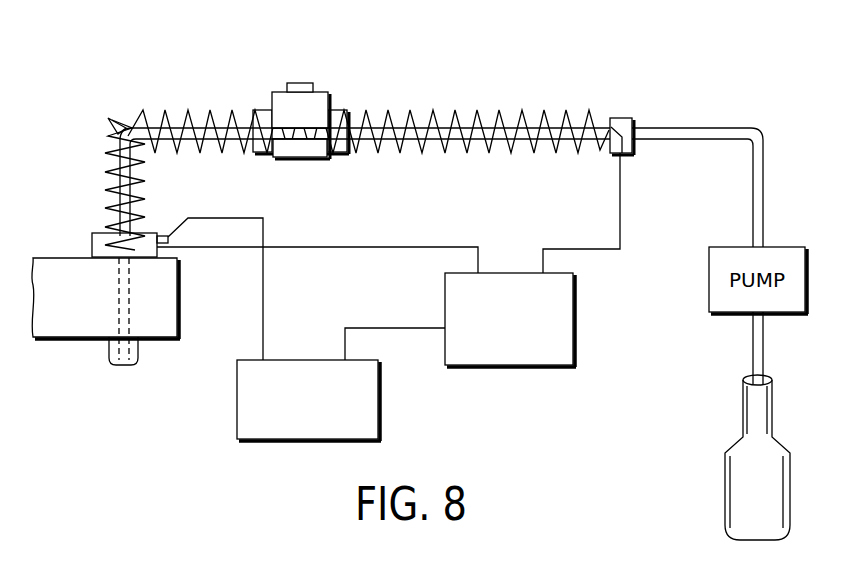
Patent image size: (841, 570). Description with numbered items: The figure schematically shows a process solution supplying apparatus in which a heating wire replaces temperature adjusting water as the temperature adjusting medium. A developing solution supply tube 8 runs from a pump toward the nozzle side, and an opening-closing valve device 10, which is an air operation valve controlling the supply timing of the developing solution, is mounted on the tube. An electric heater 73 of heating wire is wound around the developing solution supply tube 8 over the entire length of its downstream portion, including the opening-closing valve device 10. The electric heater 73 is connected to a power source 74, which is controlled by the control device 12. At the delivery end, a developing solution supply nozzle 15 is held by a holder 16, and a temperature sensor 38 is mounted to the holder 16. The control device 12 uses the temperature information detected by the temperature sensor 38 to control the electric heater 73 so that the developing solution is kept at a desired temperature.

The developing solution supply tube 8 is at (411, 118).
The opening-closing valve device 10 is at (350, 80).
The control device 12 is at (237, 421).
The developing solution supply nozzle 15 is at (140, 356).
The holder 16 is at (88, 339).
The temperature sensor 38 is at (164, 234).
The electric heater 73 is at (508, 132).
The power source 74 is at (576, 318).